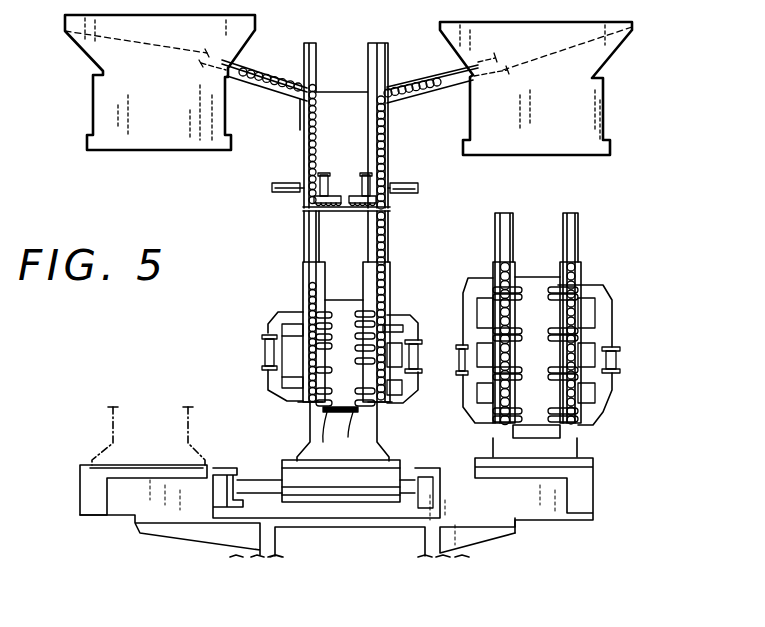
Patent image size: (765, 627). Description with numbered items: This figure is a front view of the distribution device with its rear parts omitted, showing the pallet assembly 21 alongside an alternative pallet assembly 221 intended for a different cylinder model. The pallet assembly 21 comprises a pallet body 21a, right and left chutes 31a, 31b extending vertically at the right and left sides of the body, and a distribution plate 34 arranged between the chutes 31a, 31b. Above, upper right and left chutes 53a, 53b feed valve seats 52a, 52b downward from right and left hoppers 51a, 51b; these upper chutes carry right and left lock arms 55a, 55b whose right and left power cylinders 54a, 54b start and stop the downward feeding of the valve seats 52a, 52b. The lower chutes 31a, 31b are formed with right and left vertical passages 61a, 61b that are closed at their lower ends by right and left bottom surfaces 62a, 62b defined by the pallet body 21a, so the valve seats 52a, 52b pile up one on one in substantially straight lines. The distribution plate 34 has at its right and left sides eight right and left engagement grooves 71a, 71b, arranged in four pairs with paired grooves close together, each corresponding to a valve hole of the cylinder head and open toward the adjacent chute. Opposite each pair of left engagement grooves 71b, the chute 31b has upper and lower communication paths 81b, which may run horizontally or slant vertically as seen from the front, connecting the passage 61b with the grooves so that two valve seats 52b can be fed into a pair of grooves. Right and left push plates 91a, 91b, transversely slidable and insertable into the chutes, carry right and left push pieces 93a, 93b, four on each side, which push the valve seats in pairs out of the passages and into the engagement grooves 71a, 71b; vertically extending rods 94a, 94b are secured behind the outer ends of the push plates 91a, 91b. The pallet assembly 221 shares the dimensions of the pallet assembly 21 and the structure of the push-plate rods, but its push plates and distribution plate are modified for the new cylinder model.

The pallet assembly 21 is at (248, 341).
The pallet body 21a is at (422, 365).
The pallet assembly 221 is at (596, 277).
The right chute 31a is at (303, 243).
The left chute 31b is at (387, 233).
The distribution plate 34 is at (347, 300).
The right hopper 51a is at (224, 110).
The left hopper 51b is at (601, 103).
The right valve seats 52a is at (271, 76).
The left valve seats 52b is at (417, 80).
The upper right chute 53a is at (304, 146).
The upper left chute 53b is at (389, 150).
The right power cylinder 54a is at (280, 183).
The left power cylinder 54b is at (409, 185).
The right lock arm 55a is at (325, 175).
The left lock arm 55b is at (364, 175).
The right vertical passage 61a is at (314, 243).
The left vertical passage 61b is at (388, 248).
The right bottom surface 62a is at (306, 403).
The left bottom surface 62b is at (427, 452).
The right engagement grooves 71a is at (290, 458).
The left engagement grooves 71b is at (352, 425).
The communication paths 81b is at (318, 340).
The right push plate 91a is at (273, 318).
The left push plate 91b is at (421, 316).
The right push pieces 93a is at (290, 312).
The left push pieces 93b is at (390, 317).
The right rod 94a is at (263, 355).
The left rod 94b is at (413, 373).